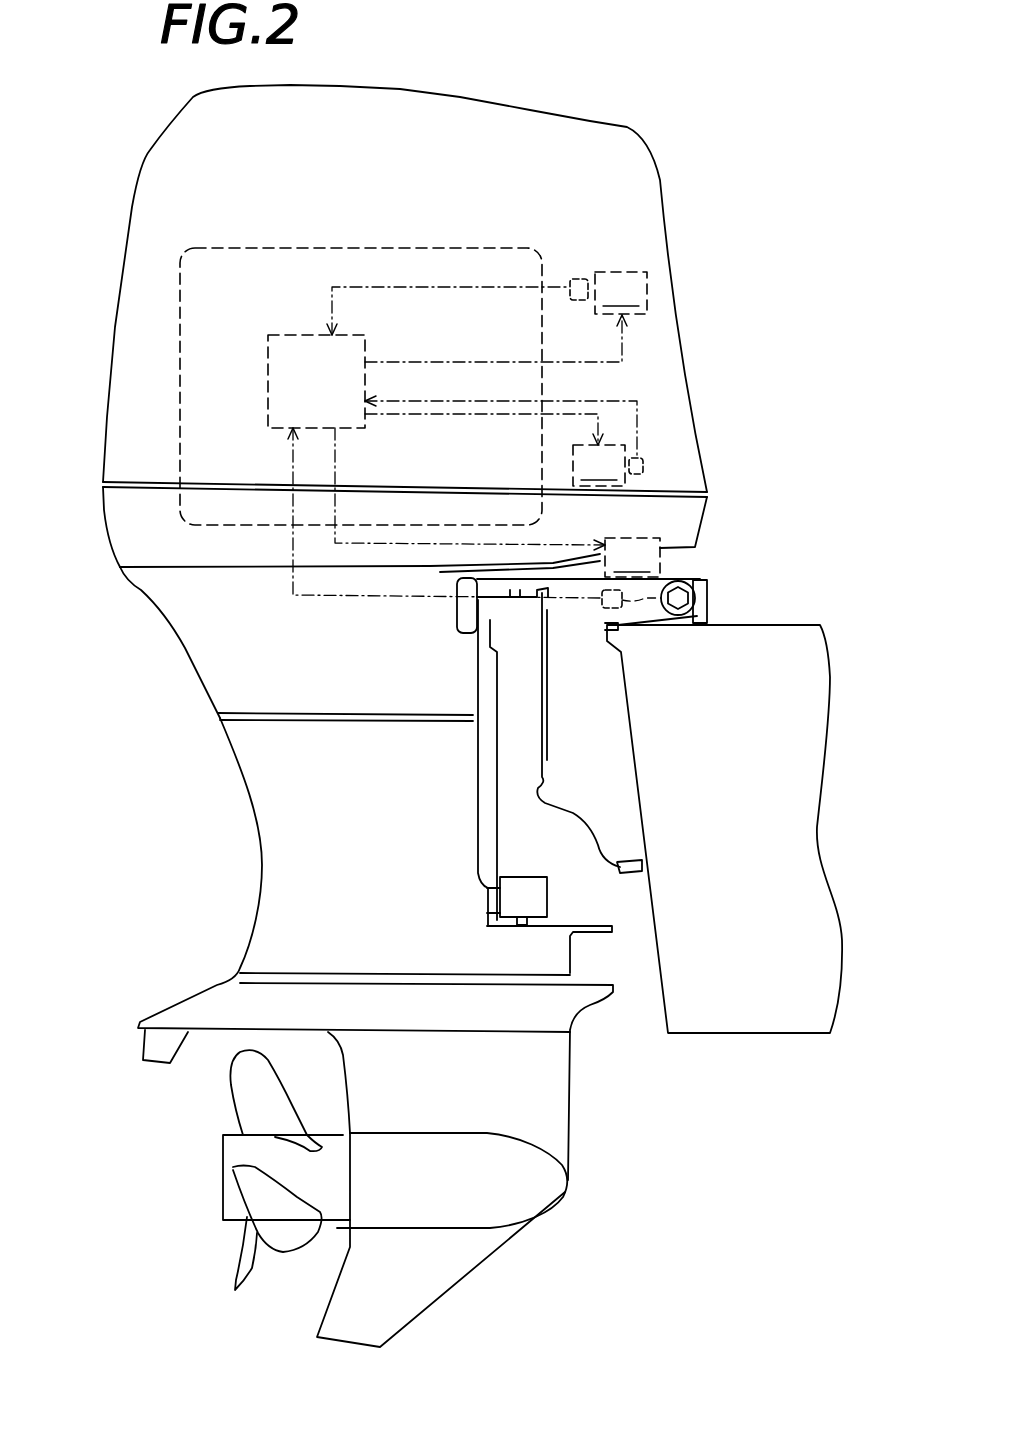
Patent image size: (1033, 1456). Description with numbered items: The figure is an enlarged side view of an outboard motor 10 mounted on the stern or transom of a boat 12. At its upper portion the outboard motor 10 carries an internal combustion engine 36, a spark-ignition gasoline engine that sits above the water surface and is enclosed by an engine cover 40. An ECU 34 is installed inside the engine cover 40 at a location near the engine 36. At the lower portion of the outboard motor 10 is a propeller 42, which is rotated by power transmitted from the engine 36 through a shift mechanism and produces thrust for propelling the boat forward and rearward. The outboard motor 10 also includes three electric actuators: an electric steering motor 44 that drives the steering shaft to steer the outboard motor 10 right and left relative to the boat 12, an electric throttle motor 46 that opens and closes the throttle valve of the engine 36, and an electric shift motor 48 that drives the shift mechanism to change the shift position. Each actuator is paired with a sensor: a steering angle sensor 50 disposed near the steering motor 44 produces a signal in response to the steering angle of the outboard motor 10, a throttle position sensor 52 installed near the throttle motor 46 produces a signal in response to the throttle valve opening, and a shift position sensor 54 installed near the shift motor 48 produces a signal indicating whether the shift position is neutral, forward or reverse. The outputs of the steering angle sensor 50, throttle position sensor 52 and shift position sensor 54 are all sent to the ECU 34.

The outboard motor 10 is at (658, 124).
The boat 12 is at (778, 1040).
The ECU 34 is at (268, 377).
The engine 36 is at (177, 318).
The engine cover 40 is at (130, 205).
The propeller 42 is at (237, 1256).
The electric steering motor 44 is at (632, 557).
The electric throttle motor 46 is at (621, 293).
The electric shift motor 48 is at (599, 465).
The steering angle sensor 50 is at (695, 598).
The throttle position sensor 52 is at (582, 278).
The shift position sensor 54 is at (637, 474).